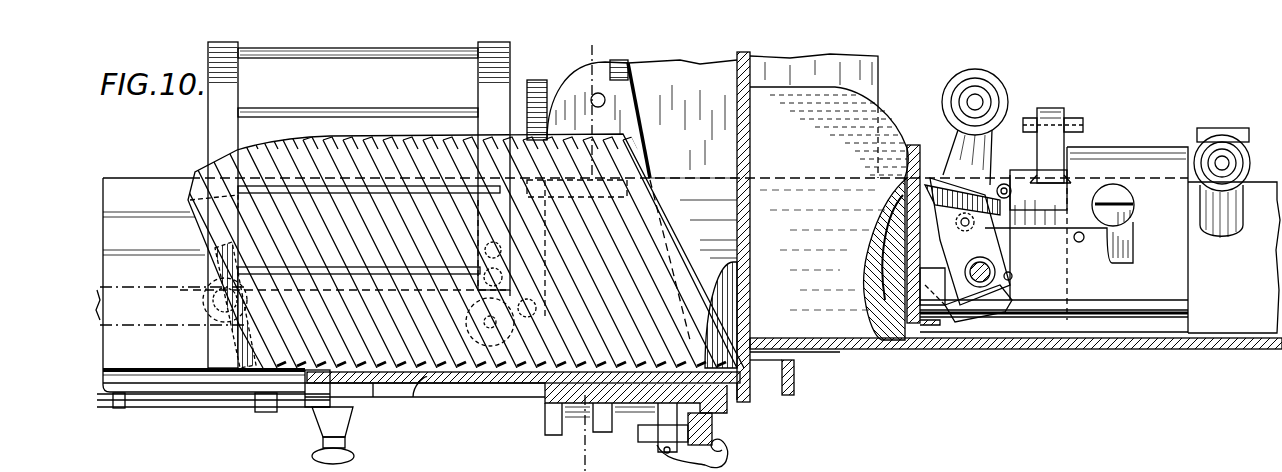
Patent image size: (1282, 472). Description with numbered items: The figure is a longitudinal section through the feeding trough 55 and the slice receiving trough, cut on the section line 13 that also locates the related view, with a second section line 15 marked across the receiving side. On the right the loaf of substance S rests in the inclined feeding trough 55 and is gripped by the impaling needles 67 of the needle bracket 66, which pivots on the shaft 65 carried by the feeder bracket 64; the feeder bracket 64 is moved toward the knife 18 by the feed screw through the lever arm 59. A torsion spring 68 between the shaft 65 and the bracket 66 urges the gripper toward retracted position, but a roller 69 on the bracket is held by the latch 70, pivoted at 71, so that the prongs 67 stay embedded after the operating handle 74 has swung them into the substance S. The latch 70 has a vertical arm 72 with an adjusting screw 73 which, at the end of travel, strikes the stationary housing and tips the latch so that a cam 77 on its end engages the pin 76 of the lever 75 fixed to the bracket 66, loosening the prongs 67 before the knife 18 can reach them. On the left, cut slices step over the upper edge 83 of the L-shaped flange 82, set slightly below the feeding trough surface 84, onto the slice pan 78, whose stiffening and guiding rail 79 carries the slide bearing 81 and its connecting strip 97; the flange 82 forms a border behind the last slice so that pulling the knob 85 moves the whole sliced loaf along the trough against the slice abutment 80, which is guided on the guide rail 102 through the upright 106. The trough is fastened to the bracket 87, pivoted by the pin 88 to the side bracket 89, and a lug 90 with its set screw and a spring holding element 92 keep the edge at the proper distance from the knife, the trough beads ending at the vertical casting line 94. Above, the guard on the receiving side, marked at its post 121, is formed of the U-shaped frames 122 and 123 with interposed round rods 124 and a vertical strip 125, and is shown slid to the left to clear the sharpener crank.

The section line 13— 13 is at (604, 57).
The section line 15— 15 is at (197, 276).
The knife 18 is at (742, 275).
The feeding trough 55 is at (1224, 362).
The lever arm 59 is at (1232, 158).
The feeder bracket 64 is at (1132, 160).
The shaft 65 is at (1003, 292).
The needle bracket 66 is at (955, 258).
The impaling needles 67 is at (890, 240).
The torsion spring 68 is at (1012, 277).
The roller 69 is at (970, 241).
The latch 70 is at (1083, 190).
The pivot 71 is at (1126, 200).
The vertical arm 72 is at (1055, 108).
The adjusting screw 73 is at (1076, 117).
The operating handle 74 is at (990, 93).
The lever 75 is at (982, 175).
The pin 76 is at (1006, 185).
The cam 77 is at (1059, 231).
The slice pan 78 is at (146, 175).
The stiffening and guiding rail 79 is at (113, 387).
The slice abutment 80 is at (211, 305).
The slide bearing 81 is at (373, 399).
The flange 82 is at (752, 372).
The upper edge 83 is at (748, 340).
The feeding trough surface 84 is at (777, 330).
The knob 85 is at (315, 455).
The bracket 87 is at (567, 97).
The pin 88 is at (605, 100).
The side bracket 89 is at (527, 90).
The lug 90 is at (648, 420).
The holding element 92 is at (730, 448).
The vertical casting line 94 is at (545, 98).
The connecting strip 97 is at (415, 385).
The guide rail 102 is at (185, 408).
The upright 106 is at (264, 412).
The post 121 is at (197, 117).
The U-shaped frame 122 is at (232, 84).
The U-shaped frame 123 is at (490, 130).
The round rods 124 is at (330, 56).
The vertical strip 125 is at (103, 306).
The substance S is at (352, 132).